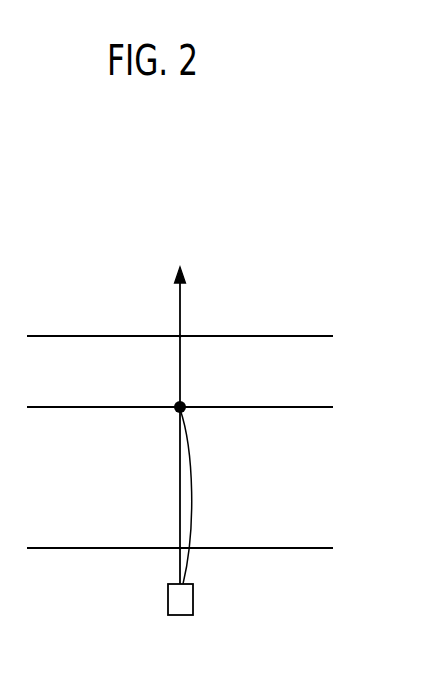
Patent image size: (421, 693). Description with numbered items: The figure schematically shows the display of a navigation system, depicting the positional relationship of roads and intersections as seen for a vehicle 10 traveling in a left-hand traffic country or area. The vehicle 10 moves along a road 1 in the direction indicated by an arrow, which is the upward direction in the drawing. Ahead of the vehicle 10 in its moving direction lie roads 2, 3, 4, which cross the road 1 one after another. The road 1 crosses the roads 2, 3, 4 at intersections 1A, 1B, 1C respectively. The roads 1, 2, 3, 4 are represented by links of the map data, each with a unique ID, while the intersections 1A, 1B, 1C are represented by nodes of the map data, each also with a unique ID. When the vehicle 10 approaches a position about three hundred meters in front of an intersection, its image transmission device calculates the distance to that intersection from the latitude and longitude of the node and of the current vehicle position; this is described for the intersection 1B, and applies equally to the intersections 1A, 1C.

The road 1 is at (181, 566).
The intersection 1A is at (180, 547).
The intersection 1B is at (185, 405).
The intersection 1C is at (181, 335).
The road 2 is at (36, 550).
The road 3 is at (36, 409).
The road 4 is at (36, 338).
The vehicle 10 is at (193, 597).